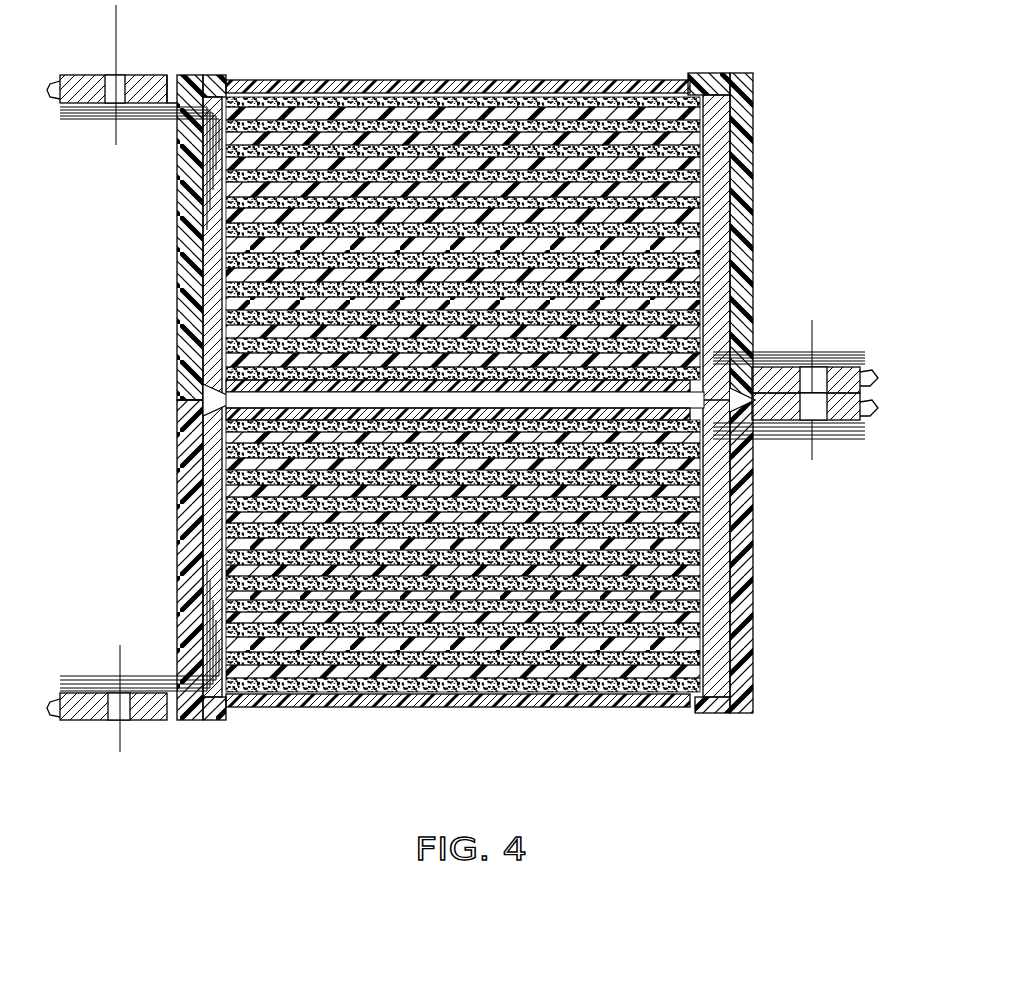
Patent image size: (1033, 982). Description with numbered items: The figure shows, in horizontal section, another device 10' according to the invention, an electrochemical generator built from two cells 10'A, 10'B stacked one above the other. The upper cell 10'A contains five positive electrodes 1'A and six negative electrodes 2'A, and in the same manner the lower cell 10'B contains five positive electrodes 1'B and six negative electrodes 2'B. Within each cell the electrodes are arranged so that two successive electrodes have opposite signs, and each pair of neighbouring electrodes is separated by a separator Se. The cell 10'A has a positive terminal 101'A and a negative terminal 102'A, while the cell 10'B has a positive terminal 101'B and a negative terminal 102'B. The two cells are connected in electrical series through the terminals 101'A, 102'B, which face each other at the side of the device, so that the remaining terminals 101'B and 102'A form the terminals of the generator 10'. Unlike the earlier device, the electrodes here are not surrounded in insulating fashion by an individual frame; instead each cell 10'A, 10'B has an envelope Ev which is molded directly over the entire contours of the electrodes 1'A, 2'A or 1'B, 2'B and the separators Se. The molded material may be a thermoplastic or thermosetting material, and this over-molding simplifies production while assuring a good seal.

The device 10' is at (488, 397).
The cell 10'A is at (566, 207).
The cell 10'B is at (557, 596).
The positive electrodes 1'A is at (463, 187).
The negative electrodes 2'A is at (463, 201).
The positive electrodes 1'B is at (463, 598).
The negative electrodes 2'B is at (463, 607).
The separator Se is at (458, 86).
The envelope Ev is at (178, 292).
The positive terminal 101'A is at (821, 389).
The negative terminal 102'A is at (133, 117).
The positive terminal 101'B is at (133, 675).
The negative terminal 102'B is at (814, 443).